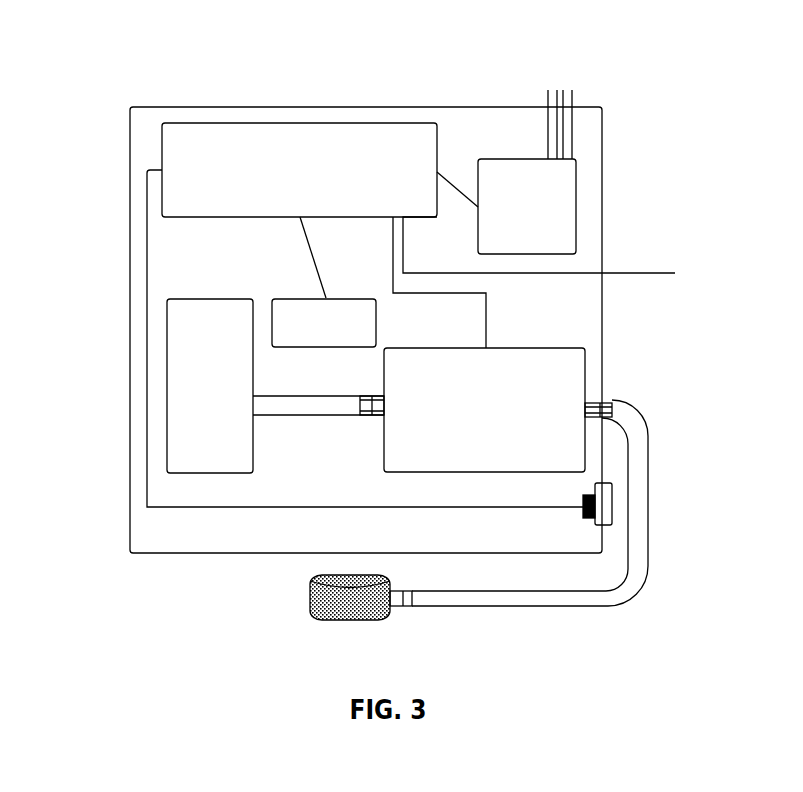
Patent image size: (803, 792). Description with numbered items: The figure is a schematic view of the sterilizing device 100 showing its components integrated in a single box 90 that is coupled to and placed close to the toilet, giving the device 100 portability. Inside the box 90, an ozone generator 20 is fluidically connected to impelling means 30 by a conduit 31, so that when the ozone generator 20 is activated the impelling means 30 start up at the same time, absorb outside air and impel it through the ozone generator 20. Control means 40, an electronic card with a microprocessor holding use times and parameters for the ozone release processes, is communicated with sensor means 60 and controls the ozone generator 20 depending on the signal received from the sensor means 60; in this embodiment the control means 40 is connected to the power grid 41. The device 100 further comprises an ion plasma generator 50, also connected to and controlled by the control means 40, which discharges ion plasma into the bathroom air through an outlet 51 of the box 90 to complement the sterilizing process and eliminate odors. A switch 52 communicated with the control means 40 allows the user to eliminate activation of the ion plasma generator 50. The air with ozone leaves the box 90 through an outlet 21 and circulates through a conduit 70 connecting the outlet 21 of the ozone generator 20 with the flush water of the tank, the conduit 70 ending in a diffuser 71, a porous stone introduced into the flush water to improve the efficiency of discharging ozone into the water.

The device 100 is at (108, 80).
The box 90 is at (247, 555).
The control means 40 is at (328, 133).
The power grid 41 is at (653, 273).
The ion plasma generator 50 is at (558, 225).
The outlet 51 is at (563, 88).
The sensor means 60 is at (355, 315).
The impelling means 30 is at (213, 450).
The conduit 31 is at (292, 405).
The ozone generator 20 is at (545, 438).
The outlet 21 is at (612, 402).
The switch 52 is at (612, 503).
The conduit 70 is at (545, 600).
The diffuser 71 is at (335, 608).